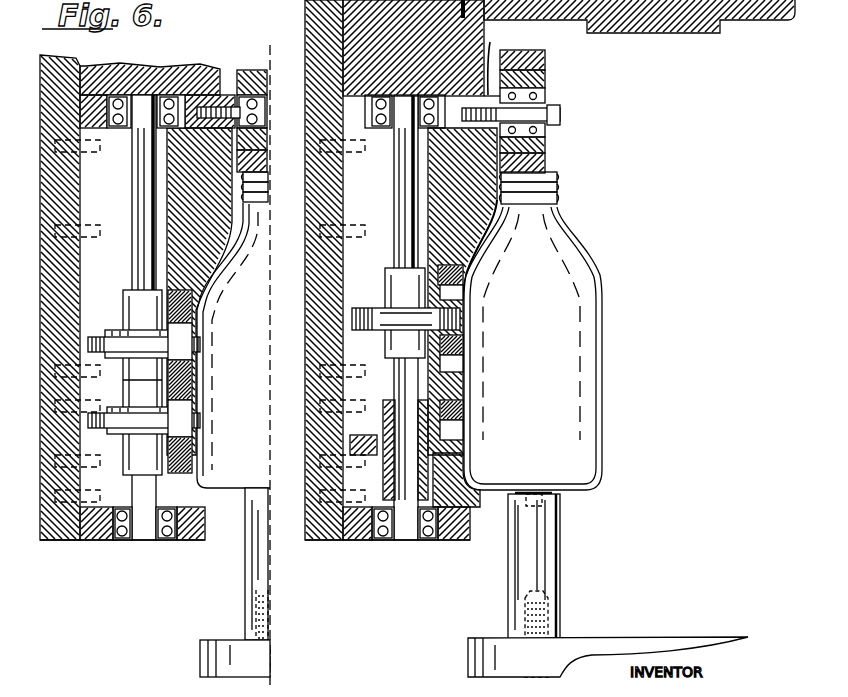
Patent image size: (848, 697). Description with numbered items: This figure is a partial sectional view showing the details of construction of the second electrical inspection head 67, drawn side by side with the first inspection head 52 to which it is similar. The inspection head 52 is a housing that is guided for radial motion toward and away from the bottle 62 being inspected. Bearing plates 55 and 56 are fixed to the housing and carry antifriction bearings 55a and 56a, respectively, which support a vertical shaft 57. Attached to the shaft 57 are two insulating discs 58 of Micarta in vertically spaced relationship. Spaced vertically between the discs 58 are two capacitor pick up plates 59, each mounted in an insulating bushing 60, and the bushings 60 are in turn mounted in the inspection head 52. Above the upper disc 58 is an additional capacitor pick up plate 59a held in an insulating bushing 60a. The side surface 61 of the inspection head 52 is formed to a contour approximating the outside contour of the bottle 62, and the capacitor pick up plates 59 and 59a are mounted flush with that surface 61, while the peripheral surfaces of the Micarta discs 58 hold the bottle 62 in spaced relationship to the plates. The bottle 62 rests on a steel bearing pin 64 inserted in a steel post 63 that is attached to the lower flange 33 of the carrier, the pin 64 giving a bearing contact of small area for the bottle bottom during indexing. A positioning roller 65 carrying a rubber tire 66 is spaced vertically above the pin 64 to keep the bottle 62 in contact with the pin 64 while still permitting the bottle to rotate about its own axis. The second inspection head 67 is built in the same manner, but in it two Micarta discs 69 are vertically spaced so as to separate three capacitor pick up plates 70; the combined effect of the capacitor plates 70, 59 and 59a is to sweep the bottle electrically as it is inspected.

The flange 33 is at (222, 645).
The inspection head 52 is at (310, 22).
The bearing plate 55 is at (490, 48).
The antifriction bearing 55a is at (127, 130).
The bearing plate 56 is at (207, 541).
The antifriction bearing 56a is at (166, 541).
The shaft 57 is at (142, 188).
The insulating disc 58 is at (356, 308).
The capacitor pick up plate 59 is at (451, 354).
The capacitor pick up plate 59a is at (451, 290).
The insulating bushing 60 is at (451, 370).
The insulating bushing 60a is at (457, 275).
The side surface 61 is at (484, 236).
The bottle 62 is at (603, 330).
The steel post 63 is at (258, 585).
The steel bearing pin 64 is at (548, 502).
The positioning roller 65 is at (565, 80).
The rubber tire 66 is at (547, 62).
The second inspection head 67 is at (72, 62).
The Micarta disc 69 is at (100, 336).
The capacitor pick up plate 70 is at (201, 305).